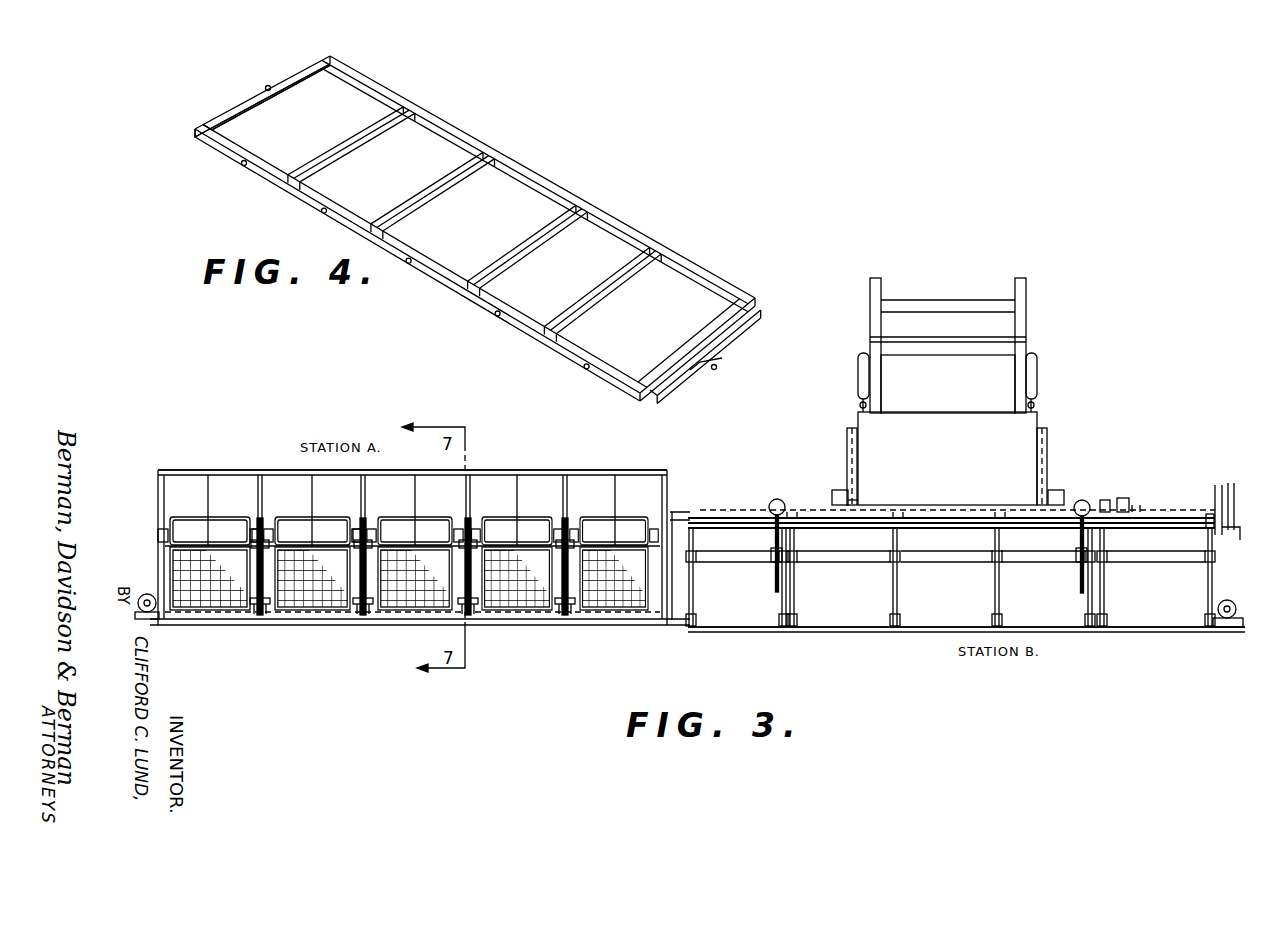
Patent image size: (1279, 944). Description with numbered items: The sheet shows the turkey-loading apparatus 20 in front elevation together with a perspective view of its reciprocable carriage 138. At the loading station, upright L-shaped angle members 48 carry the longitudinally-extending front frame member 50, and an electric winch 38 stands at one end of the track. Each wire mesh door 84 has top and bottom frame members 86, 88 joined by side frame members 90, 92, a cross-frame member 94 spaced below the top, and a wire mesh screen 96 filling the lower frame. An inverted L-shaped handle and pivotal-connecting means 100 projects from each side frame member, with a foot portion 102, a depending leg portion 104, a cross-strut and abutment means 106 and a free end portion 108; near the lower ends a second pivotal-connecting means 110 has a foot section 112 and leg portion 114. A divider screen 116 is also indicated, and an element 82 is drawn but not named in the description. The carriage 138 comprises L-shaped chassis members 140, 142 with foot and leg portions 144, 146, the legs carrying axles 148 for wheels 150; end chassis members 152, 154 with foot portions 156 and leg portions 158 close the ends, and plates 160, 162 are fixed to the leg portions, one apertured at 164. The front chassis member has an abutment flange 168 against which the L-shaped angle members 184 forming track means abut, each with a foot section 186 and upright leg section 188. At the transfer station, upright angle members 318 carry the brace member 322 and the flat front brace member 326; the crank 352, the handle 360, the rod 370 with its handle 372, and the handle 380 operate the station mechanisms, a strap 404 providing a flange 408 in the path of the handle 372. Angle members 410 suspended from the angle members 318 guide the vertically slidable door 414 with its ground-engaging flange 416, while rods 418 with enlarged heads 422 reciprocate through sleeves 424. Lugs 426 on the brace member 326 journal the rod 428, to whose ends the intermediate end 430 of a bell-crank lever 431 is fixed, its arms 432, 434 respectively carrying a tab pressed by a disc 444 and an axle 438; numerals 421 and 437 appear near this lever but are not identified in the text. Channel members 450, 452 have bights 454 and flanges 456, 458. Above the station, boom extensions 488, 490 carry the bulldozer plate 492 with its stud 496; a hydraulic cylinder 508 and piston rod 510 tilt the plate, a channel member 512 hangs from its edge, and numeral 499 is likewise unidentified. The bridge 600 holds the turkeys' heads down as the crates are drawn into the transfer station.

In FIG. 3, the turkey-loading apparatus 20 is at (672, 454).
In FIG. 3, the electric winch 38 is at (146, 592).
In FIG. 3, the L-shaped angle members 48 is at (157, 498).
In FIG. 3, the front frame member 50 is at (575, 472).
In FIG. 3, the support 82 is at (368, 616).
In FIG. 3, the wire mesh door 84 is at (316, 508).
In FIG. 3, the top frame member 86 is at (312, 514).
In FIG. 3, the bottom frame member 88 is at (314, 616).
In FIG. 3, the side frame member 90 is at (272, 574).
In FIG. 3, the side frame member 92 is at (348, 572).
In FIG. 3, the cross-frame member 94 is at (222, 550).
In FIG. 3, the wire mesh screen 96 is at (332, 624).
In FIG. 3, the handle and pivotal-connecting means 100 is at (472, 520).
In FIG. 3, the foot portion 102 is at (250, 528).
In FIG. 3, the leg portion 104 is at (410, 545).
In FIG. 3, the cross-strut and abutment means 106 is at (478, 548).
In FIG. 3, the free end portion 108 is at (252, 556).
In FIG. 3, the second pivotal-connecting means 110 is at (242, 584).
In FIG. 3, the foot section 112 is at (240, 612).
In FIG. 3, the leg portion 114 is at (256, 616).
In FIG. 3, the divider screen 116 is at (292, 552).
In FIG. 4, the carriage 138 is at (686, 238).
In FIG. 4, the L-shaped chassis member 140 is at (460, 298).
In FIG. 4, the front chassis member 142 is at (760, 310).
In FIG. 4, the foot portion 144 is at (528, 186).
In FIG. 4, the leg portion 146 is at (560, 348).
In FIG. 4, the axles 148 is at (490, 314).
In FIG. 4, the wheels 150 is at (411, 268).
In FIG. 4, the end chassis member 152 is at (246, 108).
In FIG. 4, the end chassis member 154 is at (716, 388).
In FIG. 4, the foot portion 156 is at (193, 130).
In FIG. 4, the leg portion 158 is at (662, 388).
In FIG. 4, the laterally-extending plate 160 is at (272, 80).
In FIG. 4, the laterally-extending plate 162 is at (266, 86).
In FIG. 4, the aperture 164 is at (706, 366).
In FIG. 4, the abutment flange 168 is at (424, 178).
In FIG. 4, the track means 184 is at (336, 138).
In FIG. 4, the foot section 186 is at (283, 113).
In FIG. 4, the leg section 188 is at (200, 150).
In FIG. 3, the upright L-shaped angle members 318 is at (1133, 504).
In FIG. 3, the brace member 322 is at (1128, 498).
In FIG. 3, the front brace member 326 is at (862, 524).
In FIG. 3, the handle or crank 352 is at (1240, 536).
In FIG. 3, the handle 360 is at (1224, 484).
In FIG. 3, the second continuous rod 370 is at (872, 556).
In FIG. 3, the handle 372 is at (1234, 498).
In FIG. 3, the handle 380 is at (1214, 486).
In FIG. 3, the strap 404 is at (1214, 500).
In FIG. 3, the flange 408 is at (1206, 514).
In FIG. 3, the angle members 410 is at (890, 590).
In FIG. 3, the door 414 is at (858, 632).
In FIG. 3, the ground-engaging flange 416 is at (1162, 632).
In FIG. 3, the rods 418 is at (700, 572).
In FIG. 3, the guide 421 is at (772, 547).
In FIG. 3, the enlarged head 422 is at (704, 552).
In FIG. 3, the sleeve 424 is at (704, 620).
In FIG. 3, the apertured lugs 426 is at (778, 538).
In FIG. 3, the rod 428 is at (962, 524).
In FIG. 3, the intermediate end 430 is at (774, 518).
In FIG. 3, the bell-crank lever 431 is at (1078, 562).
In FIG. 3, the arm 432 is at (770, 500).
In FIG. 3, the arm 434 is at (1060, 583).
In FIG. 3, the link 437 is at (770, 562).
In FIG. 3, the axle 438 is at (774, 565).
In FIG. 3, the disc 444 is at (780, 498).
In FIG. 3, the channel member 450 is at (830, 494).
In FIG. 3, the channel member 452 is at (1066, 492).
In FIG. 3, the bight 454 is at (830, 500).
In FIG. 3, the flange 456 is at (838, 490).
In FIG. 3, the flange 458 is at (858, 504).
In FIG. 3, the boom extension 488 is at (1026, 330).
In FIG. 3, the boom extension 490 is at (870, 318).
In FIG. 3, the bulldozer plate 492 is at (970, 412).
In FIG. 3, the stud 496 is at (1048, 462).
In FIG. 3, the column 499 is at (848, 462).
In FIG. 3, the hydraulic cylinder 508 is at (858, 384).
In FIG. 3, the piston rod 510 is at (858, 406).
In FIG. 3, the channel member 512 is at (846, 439).
In FIG. 3, the bridge 600 is at (678, 528).